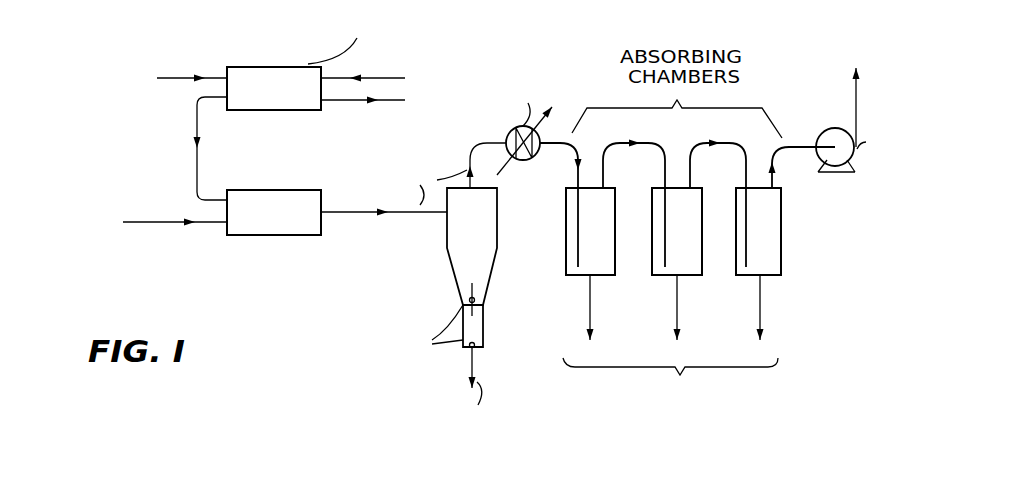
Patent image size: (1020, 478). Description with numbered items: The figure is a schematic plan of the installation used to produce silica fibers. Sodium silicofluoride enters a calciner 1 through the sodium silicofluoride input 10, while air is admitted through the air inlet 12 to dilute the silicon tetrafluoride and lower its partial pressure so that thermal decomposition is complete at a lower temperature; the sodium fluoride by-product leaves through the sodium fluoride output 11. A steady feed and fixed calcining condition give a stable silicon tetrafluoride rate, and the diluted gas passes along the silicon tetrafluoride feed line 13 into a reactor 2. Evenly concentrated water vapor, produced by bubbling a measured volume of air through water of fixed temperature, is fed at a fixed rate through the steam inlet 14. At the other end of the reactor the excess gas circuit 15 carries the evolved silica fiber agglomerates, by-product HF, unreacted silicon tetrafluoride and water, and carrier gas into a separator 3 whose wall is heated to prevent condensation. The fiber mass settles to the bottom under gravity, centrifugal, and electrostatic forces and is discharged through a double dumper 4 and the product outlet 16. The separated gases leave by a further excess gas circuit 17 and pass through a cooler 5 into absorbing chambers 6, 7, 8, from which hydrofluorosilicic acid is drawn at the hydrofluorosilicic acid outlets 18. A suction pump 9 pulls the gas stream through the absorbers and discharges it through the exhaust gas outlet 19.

The calciner 1 is at (240, 67).
The reactor 2 is at (262, 237).
The separator 3 is at (458, 289).
The double dumper 4 is at (485, 331).
The cooler 5 is at (508, 131).
The absorbing chamber 6 is at (566, 238).
The absorbing chamber 7 is at (652, 238).
The absorbing chamber 8 is at (736, 240).
The suction pump 9 is at (840, 168).
The sodium silicofluoride input 10 is at (190, 50).
The sodium fluoride output 11 is at (387, 100).
The air inlet 12 is at (403, 77).
The silicon tetrafluoride feed line 13 is at (195, 128).
The steam inlet 14 is at (128, 222).
The excess gas circuit 15 is at (398, 221).
The product outlet 16 is at (470, 368).
The excess gas circuit 17 is at (482, 180).
The hydrofluorosilicic acid outlets 18 is at (590, 302).
The exhaust gas outlet 19 is at (860, 92).